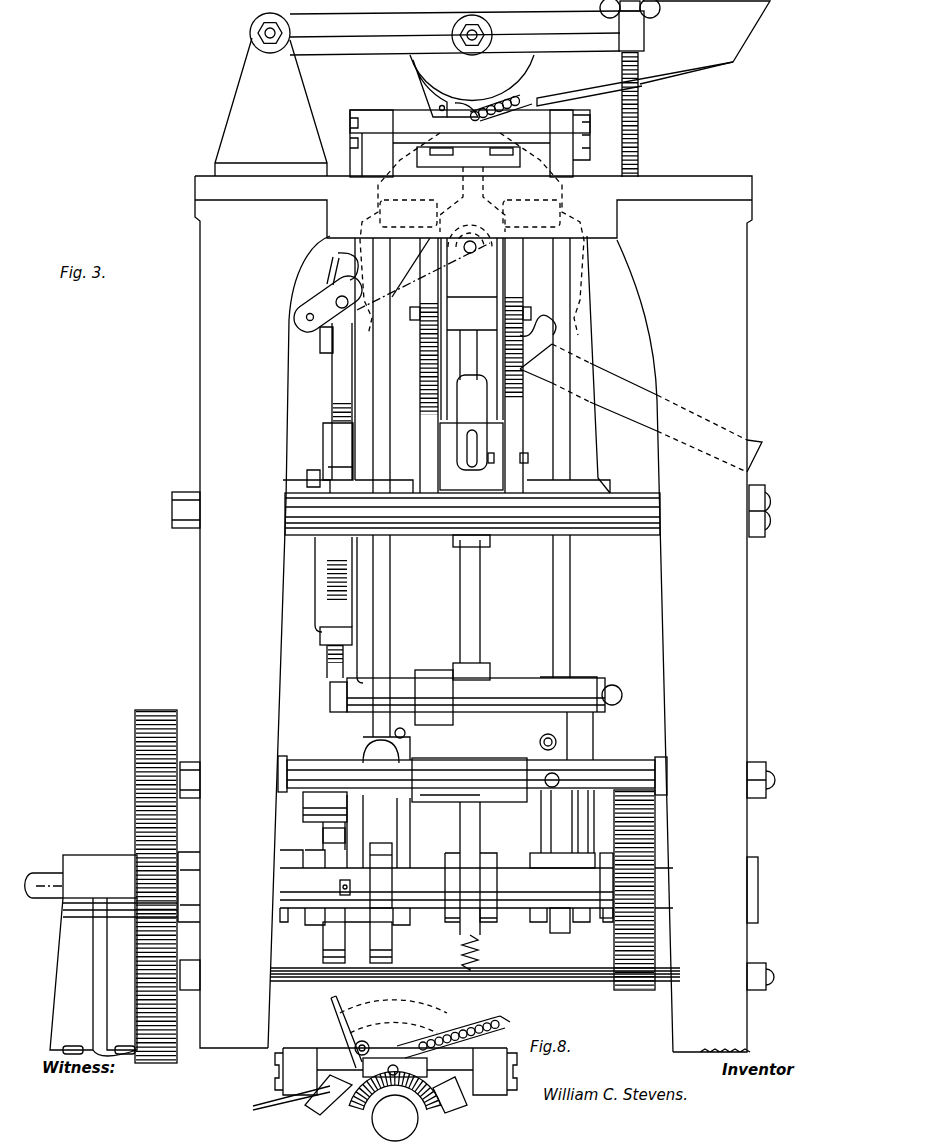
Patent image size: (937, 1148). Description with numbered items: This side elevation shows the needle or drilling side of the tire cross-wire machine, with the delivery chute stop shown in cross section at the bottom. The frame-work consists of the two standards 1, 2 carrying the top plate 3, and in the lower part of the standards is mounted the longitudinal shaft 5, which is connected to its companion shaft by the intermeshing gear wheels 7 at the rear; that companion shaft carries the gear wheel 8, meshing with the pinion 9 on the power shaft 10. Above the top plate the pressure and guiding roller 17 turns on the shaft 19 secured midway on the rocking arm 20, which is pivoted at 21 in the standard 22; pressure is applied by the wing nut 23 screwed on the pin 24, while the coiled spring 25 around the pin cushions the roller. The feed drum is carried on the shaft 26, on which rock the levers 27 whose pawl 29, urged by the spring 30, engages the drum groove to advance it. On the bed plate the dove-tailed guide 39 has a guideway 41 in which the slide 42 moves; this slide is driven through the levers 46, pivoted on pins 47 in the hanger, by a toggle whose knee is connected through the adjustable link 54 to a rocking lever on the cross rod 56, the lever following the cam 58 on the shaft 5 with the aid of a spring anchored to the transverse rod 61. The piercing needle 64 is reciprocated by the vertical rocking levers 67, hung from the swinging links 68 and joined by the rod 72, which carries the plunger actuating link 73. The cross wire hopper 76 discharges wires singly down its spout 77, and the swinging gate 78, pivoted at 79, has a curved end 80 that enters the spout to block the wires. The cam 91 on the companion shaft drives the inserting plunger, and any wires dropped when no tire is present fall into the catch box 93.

In FIG. 3, the standard 1 is at (215, 389).
In FIG. 3, the standard 2 is at (733, 377).
In FIG. 3, the top plate 3 is at (727, 183).
In FIG. 3, the longitudinal shaft 5 is at (522, 906).
In FIG. 3, the intermeshing gear wheels 7 is at (640, 992).
In FIG. 3, the gear wheel 8 is at (133, 758).
In FIG. 3, the pinion 9 is at (142, 860).
In FIG. 3, the power shaft 10 is at (38, 876).
In FIG. 8, the pressure and guiding roller 17 is at (386, 1069).
In FIG. 3, the shaft 19 is at (495, 39).
In FIG. 3, the rocking arm 20 is at (347, 48).
In FIG. 3, the pivot 21 is at (252, 33).
In FIG. 3, the standard 22 is at (237, 108).
In FIG. 3, the wing nut 23 is at (600, 10).
In FIG. 3, the pin 24 is at (640, 128).
In FIG. 3, the coiled spring 25 is at (652, 104).
In FIG. 3, the shaft 26 is at (480, 246).
In FIG. 3, the lever 27 is at (314, 308).
In FIG. 3, the pawl 29 is at (338, 253).
In FIG. 3, the spring 30 is at (330, 270).
In FIG. 3, the dove-tailed guide 39 is at (435, 166).
In FIG. 3, the guideway 41 is at (498, 170).
In FIG. 3, the slide 42 is at (468, 157).
In FIG. 3, the lever 46 is at (440, 386).
In FIG. 3, the pin 47 is at (412, 356).
In FIG. 3, the adjustable link 54 is at (483, 612).
In FIG. 3, the cross rod 56 is at (615, 768).
In FIG. 3, the cam 58 is at (480, 831).
In FIG. 3, the transverse rod 61 is at (562, 984).
In FIG. 3, the piercing or drilling needle 64 is at (478, 122).
In FIG. 3, the rocking lever 67 is at (580, 322).
In FIG. 3, the swinging link 68 is at (316, 538).
In FIG. 3, the rod 72 is at (502, 690).
In FIG. 3, the plunger actuating link 73 is at (428, 682).
In FIG. 3, the cross wire hopper 76 is at (705, 42).
In FIG. 3, the spout 77 is at (578, 100).
In FIG. 8, the spout 77 is at (505, 1032).
In FIG. 3, the swinging gate 78 is at (425, 100).
In FIG. 8, the swinging gate 78 is at (331, 1008).
In FIG. 8, the pivot 79 is at (354, 1047).
In FIG. 8, the curved end 80 is at (331, 1001).
In FIG. 3, the cam 91 is at (567, 936).
In FIG. 3, the catch box 93 is at (615, 392).